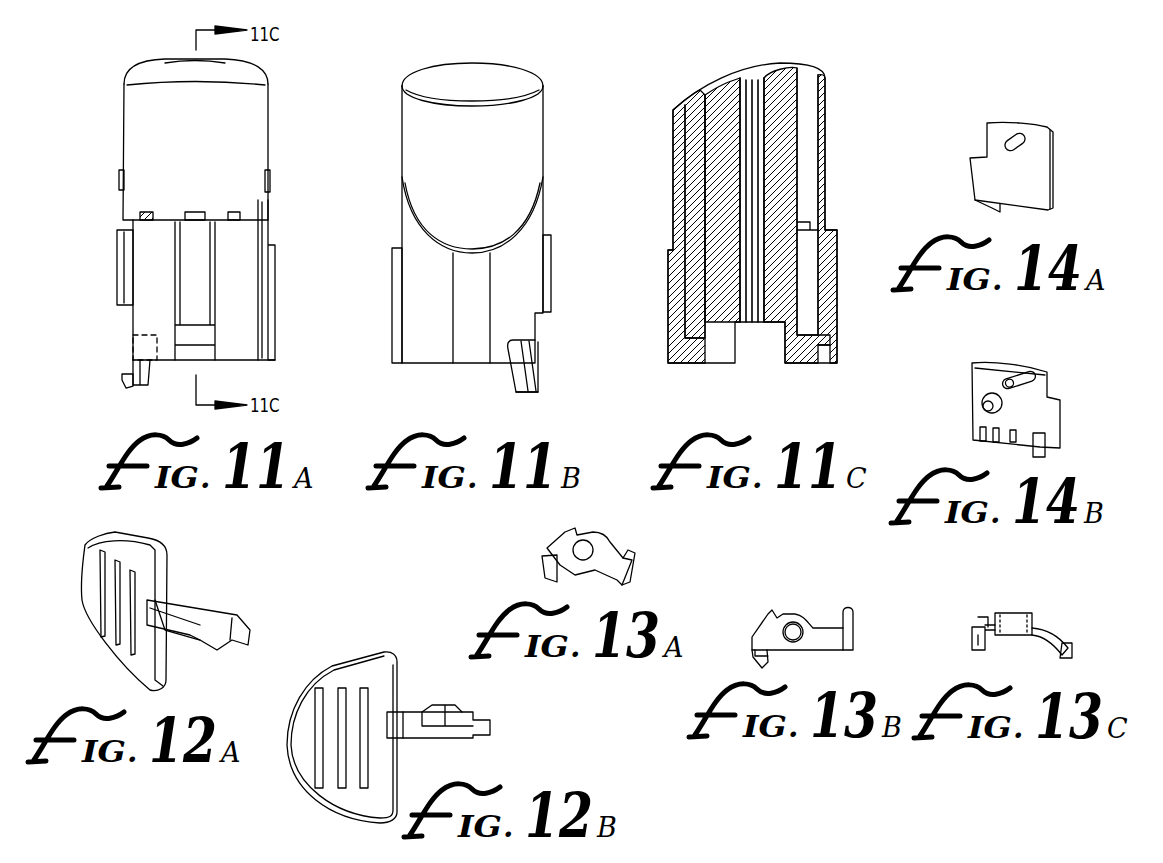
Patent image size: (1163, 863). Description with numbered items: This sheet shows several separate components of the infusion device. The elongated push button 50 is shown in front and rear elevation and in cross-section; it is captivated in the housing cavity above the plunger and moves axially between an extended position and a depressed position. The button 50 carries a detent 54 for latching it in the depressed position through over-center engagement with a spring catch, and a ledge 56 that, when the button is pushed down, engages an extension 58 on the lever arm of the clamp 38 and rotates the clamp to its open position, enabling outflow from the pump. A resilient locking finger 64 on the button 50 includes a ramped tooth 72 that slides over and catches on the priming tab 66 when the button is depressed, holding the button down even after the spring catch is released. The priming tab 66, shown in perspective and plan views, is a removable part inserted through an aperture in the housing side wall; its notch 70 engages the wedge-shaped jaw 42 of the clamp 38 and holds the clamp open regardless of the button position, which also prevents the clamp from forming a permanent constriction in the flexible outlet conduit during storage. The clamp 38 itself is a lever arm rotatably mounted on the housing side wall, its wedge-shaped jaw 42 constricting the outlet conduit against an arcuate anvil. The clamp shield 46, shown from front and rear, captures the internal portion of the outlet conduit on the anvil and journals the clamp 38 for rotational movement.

In FIG. 11A, the push button 50 is at (202, 137).
In FIG. 11B, the push button 50 is at (480, 137).
In FIG. 11C, the push button 50 is at (813, 128).
In FIG. 11C, the detent 54 is at (837, 345).
In FIG. 11A, the ledge 56 is at (137, 350).
In FIG. 11B, the ledge 56 is at (540, 352).
In FIG. 11A, the resilient locking finger 64 is at (135, 370).
In FIG. 11B, the resilient locking finger 64 is at (540, 368).
In FIG. 11A, the ramped tooth 72 is at (125, 382).
In FIG. 11B, the ramped tooth 72 is at (548, 379).
In FIG. 14A, the clamp shield 46 is at (993, 130).
In FIG. 14B, the clamp shield 46 is at (1018, 372).
In FIG. 12A, the priming tab 66 is at (92, 562).
In FIG. 12B, the priming tab 66 is at (370, 655).
In FIG. 12A, the notch 70 is at (200, 622).
In FIG. 12B, the notch 70 is at (462, 720).
In FIG. 13A, the clamp 38 is at (563, 545).
In FIG. 13B, the clamp 38 is at (765, 615).
In FIG. 13C, the clamp 38 is at (1030, 622).
In FIG. 13A, the wedge-shaped jaw 42 is at (545, 567).
In FIG. 13B, the wedge-shaped jaw 42 is at (768, 661).
In FIG. 13C, the wedge-shaped jaw 42 is at (975, 647).
In FIG. 13A, the extension 58 is at (638, 552).
In FIG. 13B, the extension 58 is at (853, 617).
In FIG. 13C, the extension 58 is at (1073, 655).